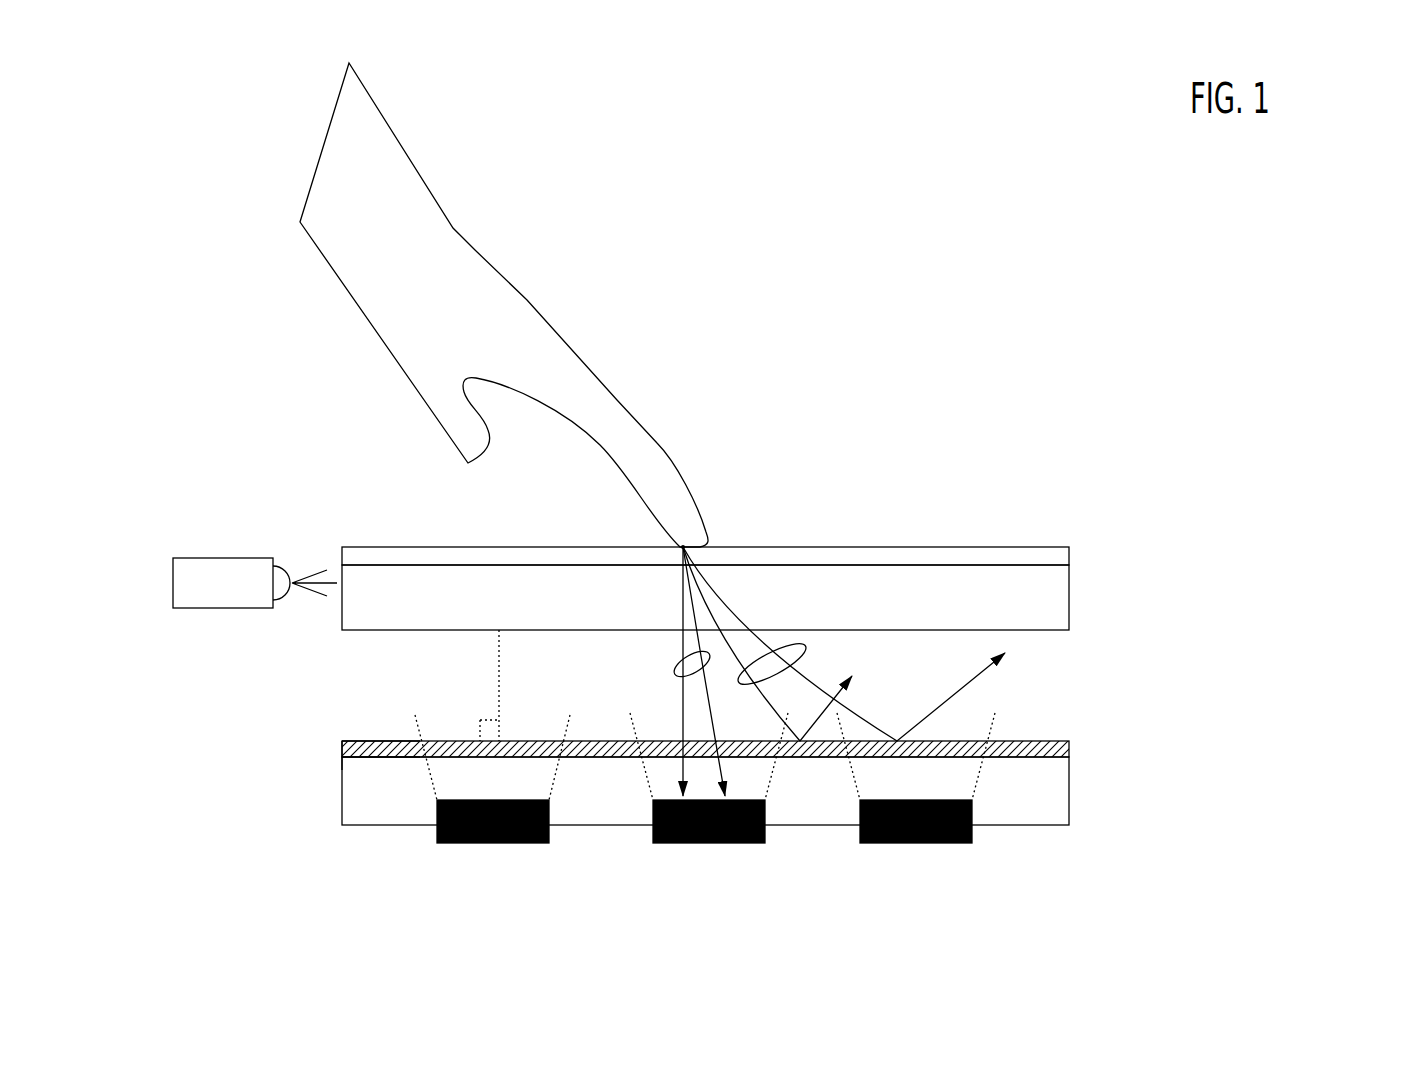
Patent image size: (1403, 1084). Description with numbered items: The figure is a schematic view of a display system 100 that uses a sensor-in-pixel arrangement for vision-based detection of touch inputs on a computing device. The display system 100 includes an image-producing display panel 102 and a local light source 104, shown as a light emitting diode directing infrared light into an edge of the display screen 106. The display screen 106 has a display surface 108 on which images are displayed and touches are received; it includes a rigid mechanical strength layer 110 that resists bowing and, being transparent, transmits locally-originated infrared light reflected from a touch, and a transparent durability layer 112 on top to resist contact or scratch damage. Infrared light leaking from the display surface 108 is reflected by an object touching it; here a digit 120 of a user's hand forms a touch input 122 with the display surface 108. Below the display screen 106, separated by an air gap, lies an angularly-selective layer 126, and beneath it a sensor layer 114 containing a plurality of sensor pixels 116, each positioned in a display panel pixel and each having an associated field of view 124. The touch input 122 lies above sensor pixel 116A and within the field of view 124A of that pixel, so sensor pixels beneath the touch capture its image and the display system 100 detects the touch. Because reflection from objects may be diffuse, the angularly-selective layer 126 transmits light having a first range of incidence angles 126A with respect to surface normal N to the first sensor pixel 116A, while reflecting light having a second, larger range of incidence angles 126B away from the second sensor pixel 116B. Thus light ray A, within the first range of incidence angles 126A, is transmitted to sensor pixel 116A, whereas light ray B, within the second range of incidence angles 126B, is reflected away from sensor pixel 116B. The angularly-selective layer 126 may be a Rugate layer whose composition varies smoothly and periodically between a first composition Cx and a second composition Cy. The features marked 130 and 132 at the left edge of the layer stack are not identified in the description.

The display system 100 is at (1153, 350).
The image-producing display panel 102 is at (1280, 660).
The local light source 104 is at (222, 558).
The display screen 106 is at (1185, 572).
The display surface 108 is at (940, 545).
The rigid mechanical strength layer 110 is at (1069, 596).
The transparent durability layer 112 is at (1069, 556).
The sensor layer 114 is at (1069, 772).
The sensor pixels 116 is at (497, 843).
The first sensor pixel 116A is at (705, 843).
The second sensor pixel 116B is at (912, 843).
The digit 120 is at (658, 442).
The touch input 122 is at (650, 535).
The field of view 124 is at (405, 700).
The field of view of sensor pixel 116A 124A is at (625, 722).
The angularly-selective layer 126 is at (1069, 748).
The first range of incidence angles 126A is at (673, 664).
The second range of incidence angles 126B is at (808, 645).
The top surface of reflective layer 130 is at (360, 752).
The top surface of substrate 132 is at (385, 766).
The light ray A is at (680, 703).
The light ray B is at (890, 718).
The surface normal N is at (486, 680).
The first composition Cx is at (343, 742).
The second composition Cy is at (343, 757).